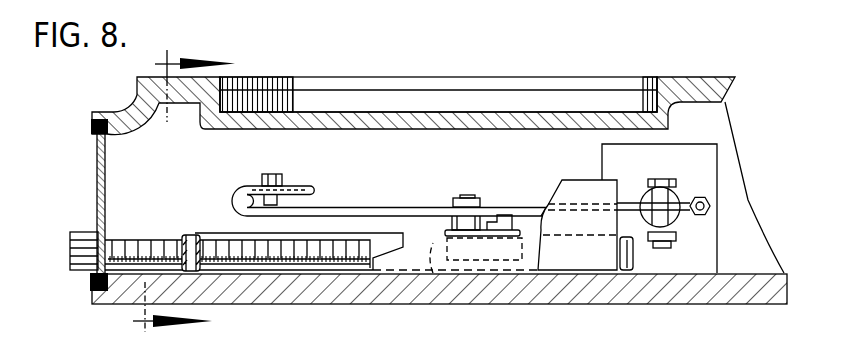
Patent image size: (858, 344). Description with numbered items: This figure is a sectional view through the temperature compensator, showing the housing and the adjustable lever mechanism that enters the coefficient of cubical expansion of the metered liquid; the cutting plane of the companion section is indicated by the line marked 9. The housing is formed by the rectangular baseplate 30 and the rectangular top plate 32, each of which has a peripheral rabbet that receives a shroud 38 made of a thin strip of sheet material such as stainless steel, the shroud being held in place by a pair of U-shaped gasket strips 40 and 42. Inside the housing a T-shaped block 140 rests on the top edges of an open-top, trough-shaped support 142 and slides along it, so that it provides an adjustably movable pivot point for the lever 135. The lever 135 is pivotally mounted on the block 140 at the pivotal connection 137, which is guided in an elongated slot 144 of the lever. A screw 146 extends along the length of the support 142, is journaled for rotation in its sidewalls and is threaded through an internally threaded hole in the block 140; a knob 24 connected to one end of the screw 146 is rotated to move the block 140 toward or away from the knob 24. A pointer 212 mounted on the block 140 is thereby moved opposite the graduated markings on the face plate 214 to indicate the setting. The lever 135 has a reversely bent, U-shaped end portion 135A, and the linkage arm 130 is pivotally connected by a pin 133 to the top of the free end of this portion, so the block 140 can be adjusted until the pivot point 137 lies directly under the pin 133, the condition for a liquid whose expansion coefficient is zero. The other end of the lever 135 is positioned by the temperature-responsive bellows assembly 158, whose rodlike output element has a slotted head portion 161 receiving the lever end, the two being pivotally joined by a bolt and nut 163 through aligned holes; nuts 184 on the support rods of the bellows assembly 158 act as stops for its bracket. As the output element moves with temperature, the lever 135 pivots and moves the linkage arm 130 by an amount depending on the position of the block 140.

The section line 9- 9 is at (184, 185).
The knob 24 is at (70, 248).
The baseplate 30 is at (350, 272).
The top plate 32 is at (462, 115).
The shroud 38 is at (97, 170).
The U-shaped gasket strip 40 is at (90, 121).
The U-shaped gasket strip 42 is at (88, 285).
The linkage arm 130 is at (283, 182).
The pin 133 is at (275, 172).
The lever 135 is at (435, 193).
The reversely bent U-shaped end portion 135A is at (316, 192).
The pivotal connection 137 is at (467, 195).
The T-shaped block 140 is at (433, 275).
The trough-shaped support 142 is at (187, 233).
The elongated slot 144 is at (393, 206).
The screw 146 is at (273, 257).
The temperature-responsive bellows assembly 158 is at (738, 232).
The slotted head portion 161 is at (683, 192).
The bolt and nut 163 is at (659, 179).
The nuts 184 is at (627, 202).
The pointer 212 is at (500, 219).
The face plate 214 is at (588, 262).